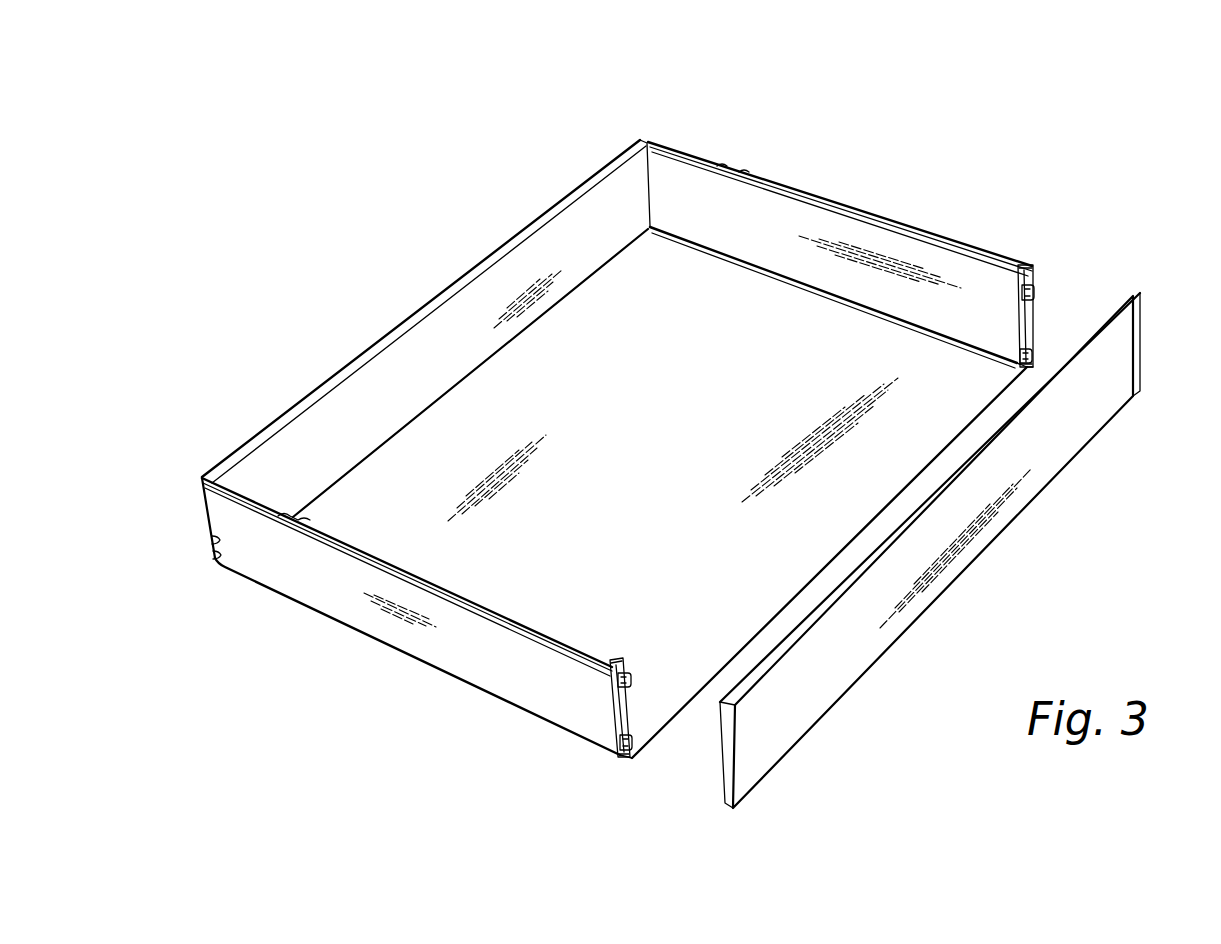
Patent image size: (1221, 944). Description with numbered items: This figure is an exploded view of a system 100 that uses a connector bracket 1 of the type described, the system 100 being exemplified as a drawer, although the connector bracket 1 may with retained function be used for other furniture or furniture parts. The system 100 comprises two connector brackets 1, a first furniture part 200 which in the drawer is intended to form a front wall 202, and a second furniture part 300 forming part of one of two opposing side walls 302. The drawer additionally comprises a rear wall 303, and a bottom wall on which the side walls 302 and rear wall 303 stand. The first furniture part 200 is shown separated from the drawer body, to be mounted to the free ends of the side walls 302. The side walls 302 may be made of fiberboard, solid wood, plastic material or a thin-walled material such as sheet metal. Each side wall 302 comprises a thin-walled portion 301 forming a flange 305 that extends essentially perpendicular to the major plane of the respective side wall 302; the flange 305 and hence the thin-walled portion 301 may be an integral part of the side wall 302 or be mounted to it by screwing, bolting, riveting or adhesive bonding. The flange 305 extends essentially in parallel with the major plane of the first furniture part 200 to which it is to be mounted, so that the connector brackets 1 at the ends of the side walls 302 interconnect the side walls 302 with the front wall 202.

The system 100 is at (768, 134).
The first furniture part 200 is at (851, 669).
The front wall 202 is at (917, 560).
The second furniture part 300 is at (935, 219).
The side wall 302 is at (847, 202).
The rear wall 303 is at (443, 290).
The connector bracket 1 is at (1028, 288).
The thin-walled portion 301 is at (1020, 322).
The flange 305 is at (1023, 347).